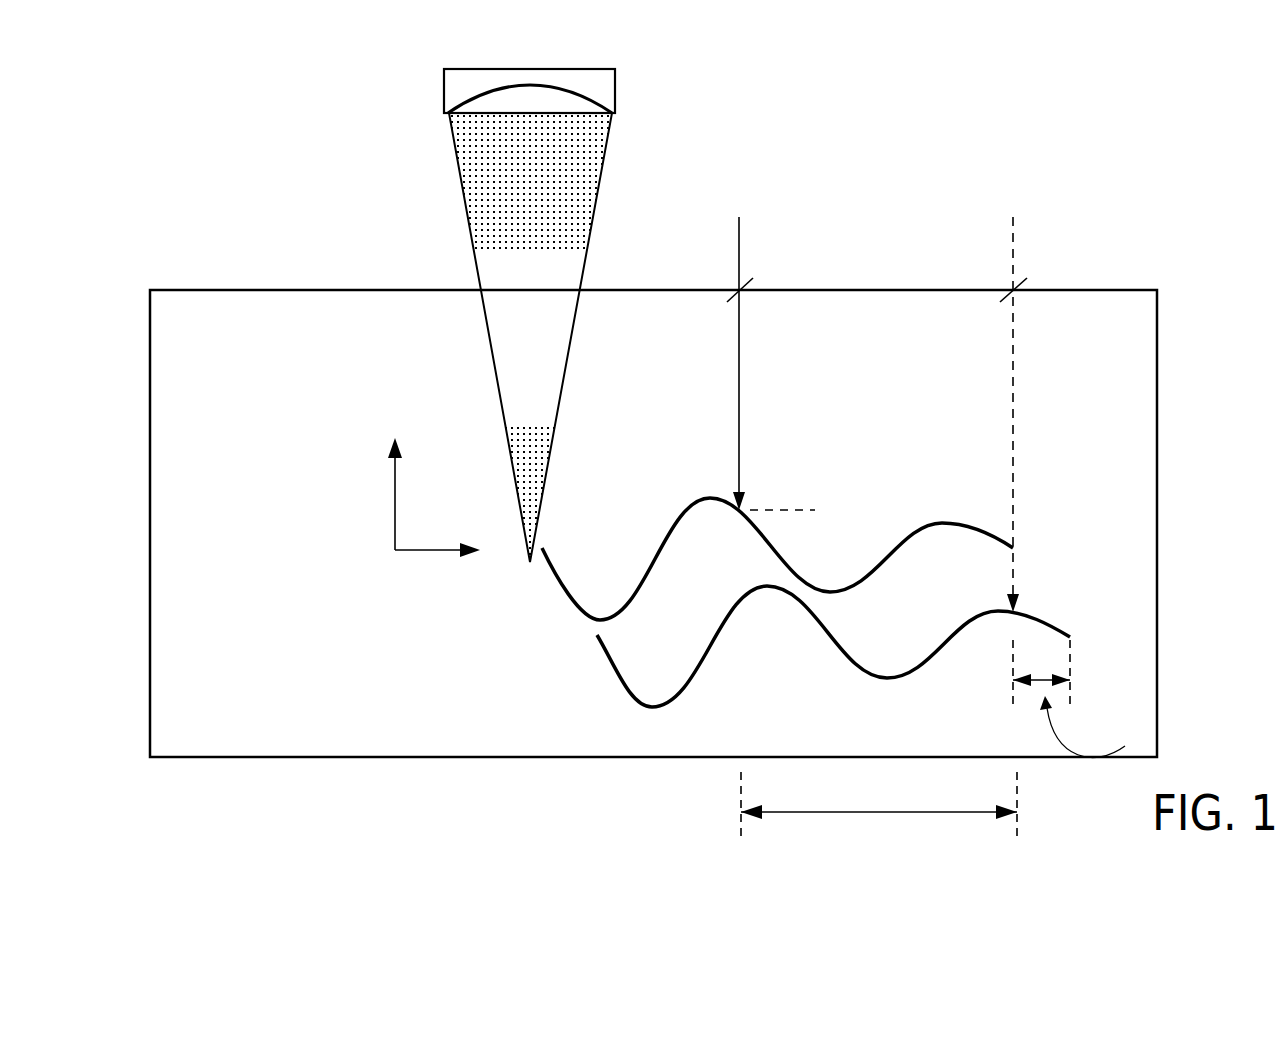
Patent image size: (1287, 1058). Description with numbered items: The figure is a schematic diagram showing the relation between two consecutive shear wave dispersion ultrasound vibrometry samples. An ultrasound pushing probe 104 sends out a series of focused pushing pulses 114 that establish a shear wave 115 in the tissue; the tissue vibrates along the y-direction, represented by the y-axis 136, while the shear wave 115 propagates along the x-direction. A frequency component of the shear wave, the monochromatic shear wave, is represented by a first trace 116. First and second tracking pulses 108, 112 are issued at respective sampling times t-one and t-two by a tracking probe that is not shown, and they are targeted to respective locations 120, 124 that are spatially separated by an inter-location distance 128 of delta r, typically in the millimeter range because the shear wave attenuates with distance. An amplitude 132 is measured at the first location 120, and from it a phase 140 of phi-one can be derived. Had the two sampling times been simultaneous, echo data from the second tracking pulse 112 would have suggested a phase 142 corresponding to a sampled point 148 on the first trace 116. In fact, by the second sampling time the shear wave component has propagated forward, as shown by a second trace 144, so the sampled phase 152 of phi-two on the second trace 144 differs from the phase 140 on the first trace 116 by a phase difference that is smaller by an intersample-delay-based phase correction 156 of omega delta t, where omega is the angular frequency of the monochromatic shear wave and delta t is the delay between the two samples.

The ultrasound pushing probe 104 is at (615, 88).
The focused pushing pulses 114 is at (612, 210).
The first tracking pulse 108 is at (741, 372).
The second tracking pulse 112 is at (1015, 372).
The first trace 116 is at (874, 542).
The shear wave 115 is at (846, 690).
The second trace 144 is at (697, 672).
The first location 120 is at (736, 515).
The phase Φ1 140 is at (690, 466).
The amplitude 132 is at (796, 508).
The sampled point 148 is at (1010, 546).
The phase 142 is at (1018, 546).
The second location 124 is at (1020, 606).
The sampled phase Φ2 152 is at (957, 581).
The intersample-delay-based phase correction 156 is at (1113, 695).
The inter-location distance 128 is at (905, 800).
The y-axis 136 is at (393, 470).